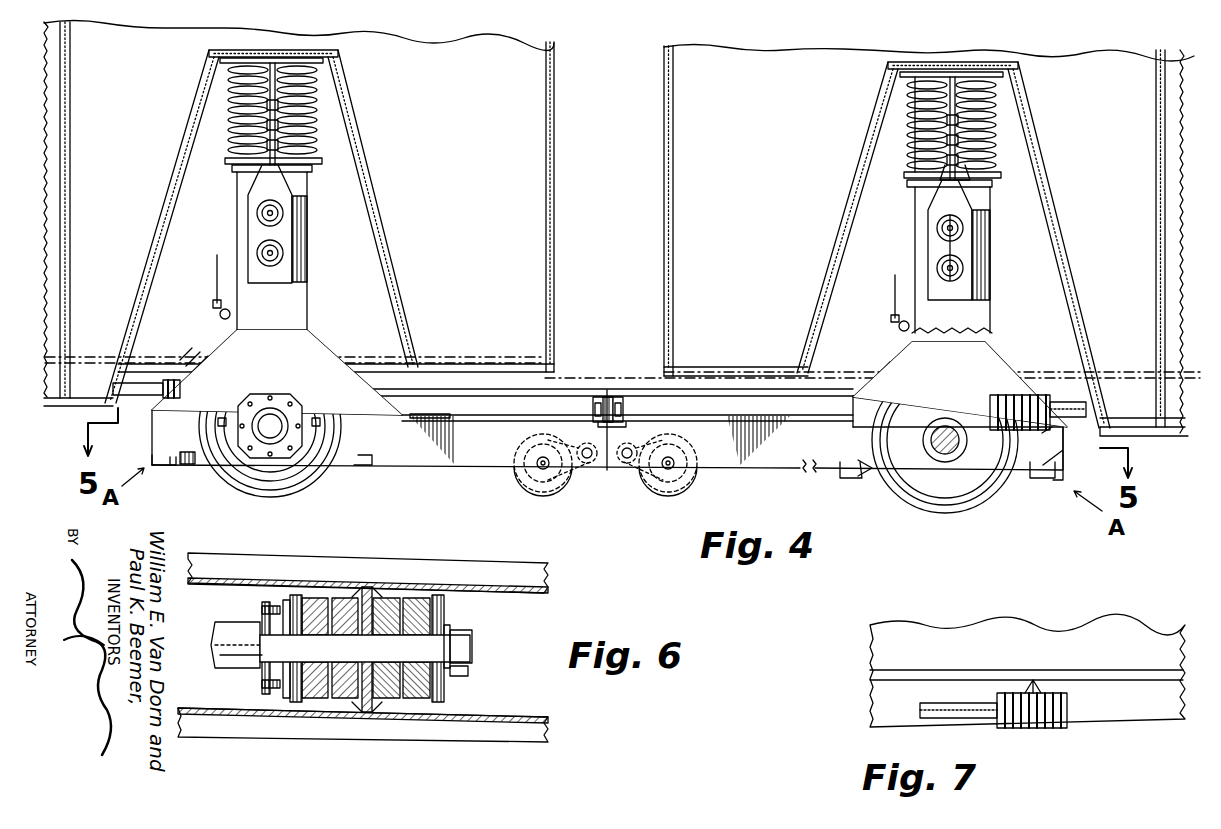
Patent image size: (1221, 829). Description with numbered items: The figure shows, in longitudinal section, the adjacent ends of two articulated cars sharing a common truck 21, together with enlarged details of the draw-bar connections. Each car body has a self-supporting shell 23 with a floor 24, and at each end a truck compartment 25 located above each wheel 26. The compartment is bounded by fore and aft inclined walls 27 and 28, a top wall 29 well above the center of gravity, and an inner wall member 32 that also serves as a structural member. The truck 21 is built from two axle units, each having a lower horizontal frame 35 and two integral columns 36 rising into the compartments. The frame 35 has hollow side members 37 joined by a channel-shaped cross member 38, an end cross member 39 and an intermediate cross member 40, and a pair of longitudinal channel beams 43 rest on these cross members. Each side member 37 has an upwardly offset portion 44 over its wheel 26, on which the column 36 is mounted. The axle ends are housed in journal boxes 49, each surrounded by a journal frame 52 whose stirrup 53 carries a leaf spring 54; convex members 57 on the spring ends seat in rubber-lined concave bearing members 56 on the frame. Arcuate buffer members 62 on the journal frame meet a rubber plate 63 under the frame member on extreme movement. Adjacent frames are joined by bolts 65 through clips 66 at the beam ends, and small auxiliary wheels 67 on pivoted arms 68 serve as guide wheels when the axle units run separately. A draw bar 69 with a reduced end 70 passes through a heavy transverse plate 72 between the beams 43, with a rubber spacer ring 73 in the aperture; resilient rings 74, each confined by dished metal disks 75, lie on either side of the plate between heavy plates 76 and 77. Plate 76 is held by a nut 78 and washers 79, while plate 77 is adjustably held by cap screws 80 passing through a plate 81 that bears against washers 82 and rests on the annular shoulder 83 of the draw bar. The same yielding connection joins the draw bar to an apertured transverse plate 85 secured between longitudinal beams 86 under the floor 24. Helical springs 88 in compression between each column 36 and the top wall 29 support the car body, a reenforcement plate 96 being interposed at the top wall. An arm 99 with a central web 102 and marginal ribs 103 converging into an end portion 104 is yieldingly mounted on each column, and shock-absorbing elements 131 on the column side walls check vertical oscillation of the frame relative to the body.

In FIG. 4, the truck 21 is at (611, 480).
In FIG. 4, the shell 23 is at (1168, 425).
In FIG. 4, the floor 24 is at (726, 363).
In FIG. 7, the floor 24 is at (983, 671).
In FIG. 4, the truck compartment 25 is at (209, 186).
In FIG. 4, the wheel 26 is at (306, 487).
In FIG. 4, the inclined wall 27 is at (163, 239).
In FIG. 4, the inclined wall 28 is at (387, 233).
In FIG. 4, the top wall 29 is at (272, 50).
In FIG. 4, the wall member 32 is at (615, 218).
In FIG. 4, the lower frame 35 is at (490, 460).
In FIG. 4, the column 36 is at (293, 300).
In FIG. 4, the side member 37 is at (463, 443).
In FIG. 4, the cross member 38 is at (592, 424).
In FIG. 4, the cross member 39 is at (150, 454).
In FIG. 4, the intermediate cross member 40 is at (852, 397).
In FIG. 4, the beam 43 is at (462, 388).
In FIG. 6, the beam 43 is at (550, 576).
In FIG. 4, the offset portion 44 is at (235, 344).
In FIG. 4, the journal box 49 is at (290, 404).
In FIG. 4, the journal frame 52 is at (250, 452).
In FIG. 4, the stirrup 53 is at (267, 467).
In FIG. 4, the leaf spring 54 is at (235, 461).
In FIG. 4, the concave bearing member 56 is at (168, 456).
In FIG. 4, the convex member 57 is at (170, 466).
In FIG. 4, the buffer member 62 is at (292, 380).
In FIG. 4, the arcuate rubber plate 63 is at (276, 371).
In FIG. 4, the bolt 65 is at (595, 406).
In FIG. 4, the clip 66 is at (624, 396).
In FIG. 4, the auxiliary wheel 67 is at (542, 486).
In FIG. 4, the pivoted arm 68 is at (588, 465).
In FIG. 4, the draw bar 69 is at (138, 383).
In FIG. 6, the draw bar 69 is at (215, 638).
In FIG. 6, the reduced end 70 is at (468, 672).
In FIG. 4, the transverse plate 72 is at (1024, 395).
In FIG. 6, the transverse plate 72 is at (370, 587).
In FIG. 6, the spacer ring 73 is at (385, 588).
In FIG. 6, the resilient ring 74 is at (335, 702).
In FIG. 6, the metal disk 75 is at (330, 598).
In FIG. 6, the plate 76 is at (438, 596).
In FIG. 6, the plate 77 is at (296, 596).
In FIG. 6, the nut 78 is at (466, 639).
In FIG. 6, the washer 79 is at (447, 624).
In FIG. 6, the cap screw 80 is at (260, 610).
In FIG. 6, the plate 81 is at (264, 598).
In FIG. 6, the washer 82 is at (285, 601).
In FIG. 6, the annular shoulder 83 is at (220, 656).
In FIG. 7, the transverse plate 85 is at (1035, 729).
In FIG. 7, the longitudinal beam 86 is at (1145, 718).
In FIG. 4, the helical spring 88 is at (238, 142).
In FIG. 4, the reenforcement plate 96 is at (916, 76).
In FIG. 4, the arm 99 is at (281, 196).
In FIG. 4, the central web 102 is at (943, 248).
In FIG. 4, the marginal rib 103 is at (928, 226).
In FIG. 4, the end portion 104 is at (982, 159).
In FIG. 4, the shock-absorbing element 131 is at (218, 312).